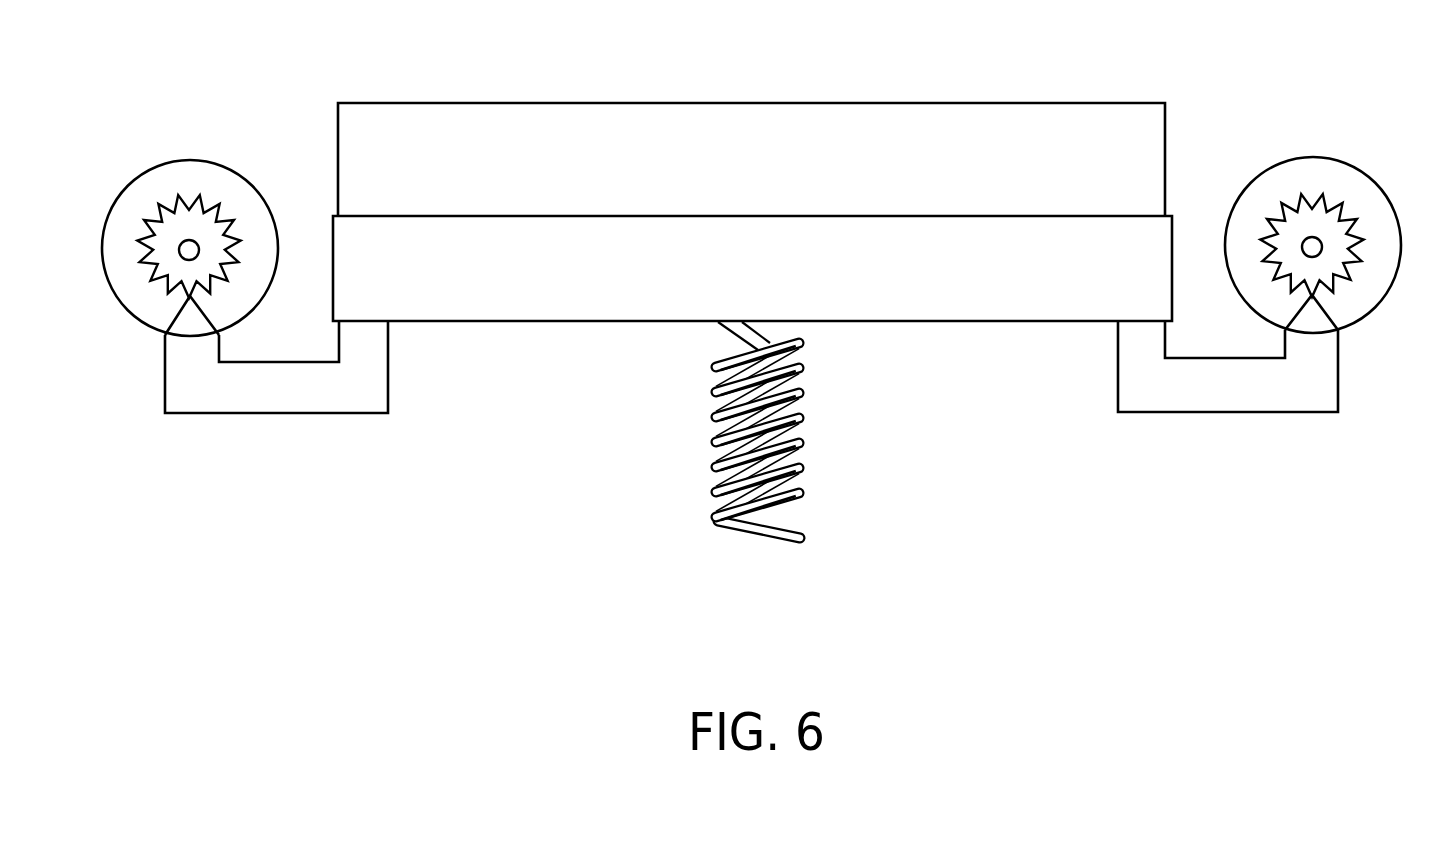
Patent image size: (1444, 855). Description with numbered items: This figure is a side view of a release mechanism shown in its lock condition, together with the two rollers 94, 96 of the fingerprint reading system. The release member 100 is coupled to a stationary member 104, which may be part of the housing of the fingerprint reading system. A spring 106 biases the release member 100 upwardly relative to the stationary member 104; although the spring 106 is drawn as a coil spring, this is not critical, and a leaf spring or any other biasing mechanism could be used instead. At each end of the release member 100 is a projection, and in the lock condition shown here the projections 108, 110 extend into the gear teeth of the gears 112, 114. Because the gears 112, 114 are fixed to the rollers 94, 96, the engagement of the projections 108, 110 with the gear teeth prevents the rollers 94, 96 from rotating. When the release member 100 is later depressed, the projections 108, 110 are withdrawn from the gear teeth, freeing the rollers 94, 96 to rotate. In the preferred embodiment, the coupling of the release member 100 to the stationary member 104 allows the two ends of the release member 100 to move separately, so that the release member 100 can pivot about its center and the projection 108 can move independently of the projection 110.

The roller 94 is at (1303, 157).
The roller 96 is at (188, 160).
The release member 100 is at (962, 109).
The stationary member 104 is at (509, 315).
The spring 106 is at (797, 425).
The projection 108 is at (1315, 328).
The projection 110 is at (192, 329).
The gear 112 is at (1347, 235).
The gear 114 is at (152, 237).